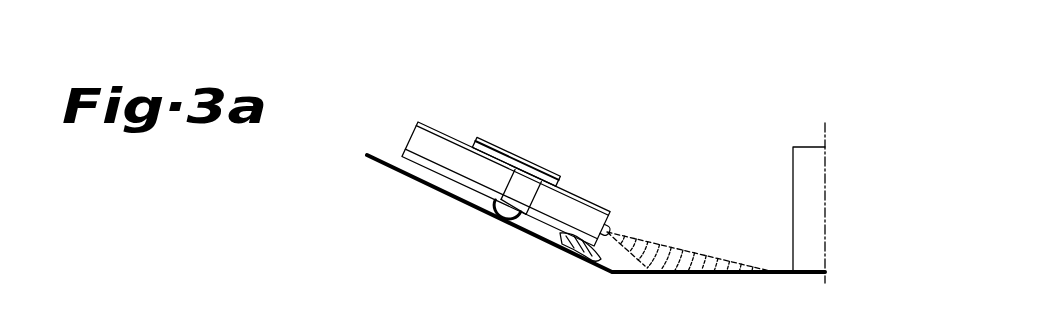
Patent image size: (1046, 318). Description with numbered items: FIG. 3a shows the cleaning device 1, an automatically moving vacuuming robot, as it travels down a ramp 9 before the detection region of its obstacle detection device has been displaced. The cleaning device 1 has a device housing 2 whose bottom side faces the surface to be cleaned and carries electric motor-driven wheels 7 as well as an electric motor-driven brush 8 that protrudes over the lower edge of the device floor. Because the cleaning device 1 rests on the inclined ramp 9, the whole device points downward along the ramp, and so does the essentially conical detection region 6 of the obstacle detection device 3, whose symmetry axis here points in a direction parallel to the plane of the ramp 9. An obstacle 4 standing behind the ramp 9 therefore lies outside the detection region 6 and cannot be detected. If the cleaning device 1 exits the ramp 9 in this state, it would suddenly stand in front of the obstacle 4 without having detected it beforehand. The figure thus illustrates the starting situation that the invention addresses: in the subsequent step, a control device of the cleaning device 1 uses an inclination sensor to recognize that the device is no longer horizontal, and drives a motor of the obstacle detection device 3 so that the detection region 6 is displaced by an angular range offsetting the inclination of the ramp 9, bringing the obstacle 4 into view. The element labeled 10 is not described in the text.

The cleaning device 1 is at (445, 116).
The device housing 2 is at (458, 150).
The obstacle detection device 3 is at (548, 148).
The obstacle 4 is at (818, 189).
The detection region 6 is at (670, 248).
The wheels 7 is at (492, 218).
The brush 8 is at (567, 250).
The ramp 9 is at (528, 233).
The base plate 10 is at (458, 312).